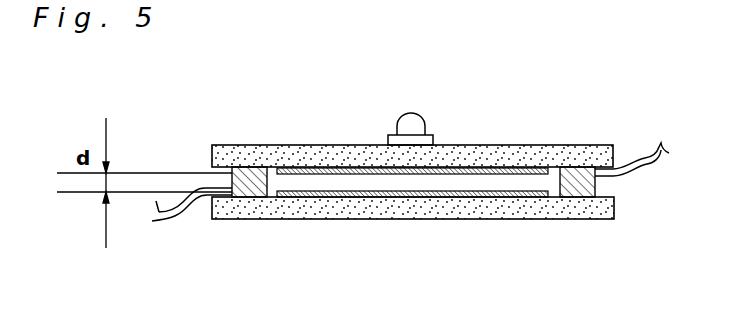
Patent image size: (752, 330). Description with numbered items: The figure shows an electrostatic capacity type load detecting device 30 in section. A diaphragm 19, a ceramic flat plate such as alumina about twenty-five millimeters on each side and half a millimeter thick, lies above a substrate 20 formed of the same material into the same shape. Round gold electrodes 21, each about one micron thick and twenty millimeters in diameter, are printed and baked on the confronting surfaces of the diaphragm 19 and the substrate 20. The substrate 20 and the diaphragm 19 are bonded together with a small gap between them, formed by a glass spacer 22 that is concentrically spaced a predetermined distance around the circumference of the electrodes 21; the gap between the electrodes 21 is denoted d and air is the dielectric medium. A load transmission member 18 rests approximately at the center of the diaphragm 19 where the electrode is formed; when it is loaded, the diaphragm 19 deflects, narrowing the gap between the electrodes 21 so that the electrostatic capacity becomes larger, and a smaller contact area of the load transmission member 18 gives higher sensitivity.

The load transmission member 18 is at (413, 125).
The diaphragm 19 is at (325, 152).
The substrate 20 is at (336, 205).
The gold electrodes 21 is at (495, 168).
The glass spacer 22 is at (587, 203).
The electrostatic capacity type load detecting device 30 is at (410, 172).